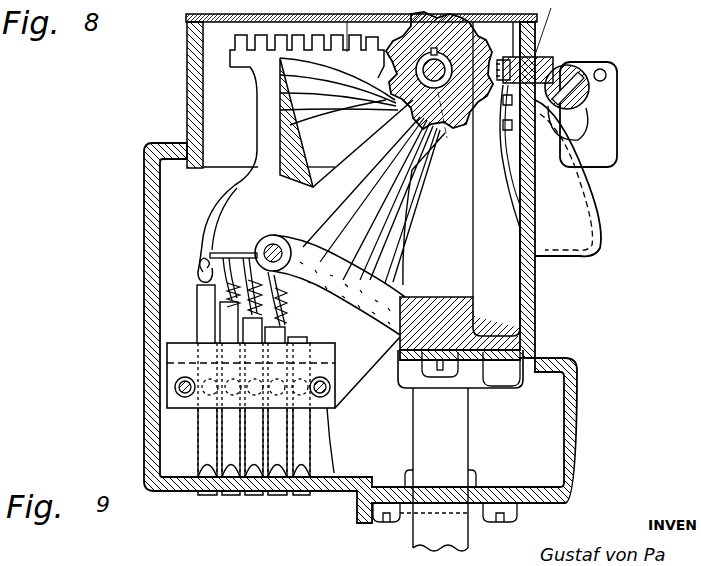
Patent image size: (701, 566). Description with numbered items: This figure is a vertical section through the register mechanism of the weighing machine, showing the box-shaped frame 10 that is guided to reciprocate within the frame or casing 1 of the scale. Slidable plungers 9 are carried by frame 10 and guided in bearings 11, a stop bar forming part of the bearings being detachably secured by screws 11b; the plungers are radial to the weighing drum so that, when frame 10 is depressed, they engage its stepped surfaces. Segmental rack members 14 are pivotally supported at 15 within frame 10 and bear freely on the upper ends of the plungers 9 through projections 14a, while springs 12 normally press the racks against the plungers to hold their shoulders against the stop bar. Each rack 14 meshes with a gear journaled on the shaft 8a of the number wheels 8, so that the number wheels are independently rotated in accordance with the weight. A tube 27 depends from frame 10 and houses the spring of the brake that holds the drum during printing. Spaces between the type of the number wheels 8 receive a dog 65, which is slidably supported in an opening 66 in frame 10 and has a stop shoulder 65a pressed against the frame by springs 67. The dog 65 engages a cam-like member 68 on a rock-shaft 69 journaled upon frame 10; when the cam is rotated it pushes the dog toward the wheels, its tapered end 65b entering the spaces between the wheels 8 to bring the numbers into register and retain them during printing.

The frame or casing 1 is at (148, 290).
The number wheels 8 is at (471, 52).
The shaft of the number wheels 8a is at (446, 124).
The plungers 9 is at (277, 450).
The box-shaped frame 10 is at (186, 125).
The bearings 11 is at (177, 346).
The screws 11b is at (187, 400).
The springs 12 is at (199, 278).
The segmental rack members 14 is at (431, 235).
The projections 14a is at (243, 242).
The pivot 15 is at (281, 243).
The tube 27 is at (448, 450).
The dog 65 is at (538, 60).
The stop shoulder 65a is at (501, 51).
The tapered end 65b is at (505, 110).
The opening 66 is at (554, 27).
The springs 67 is at (505, 148).
The cam-like member 68 is at (590, 95).
The rock-shaft 69 is at (576, 66).